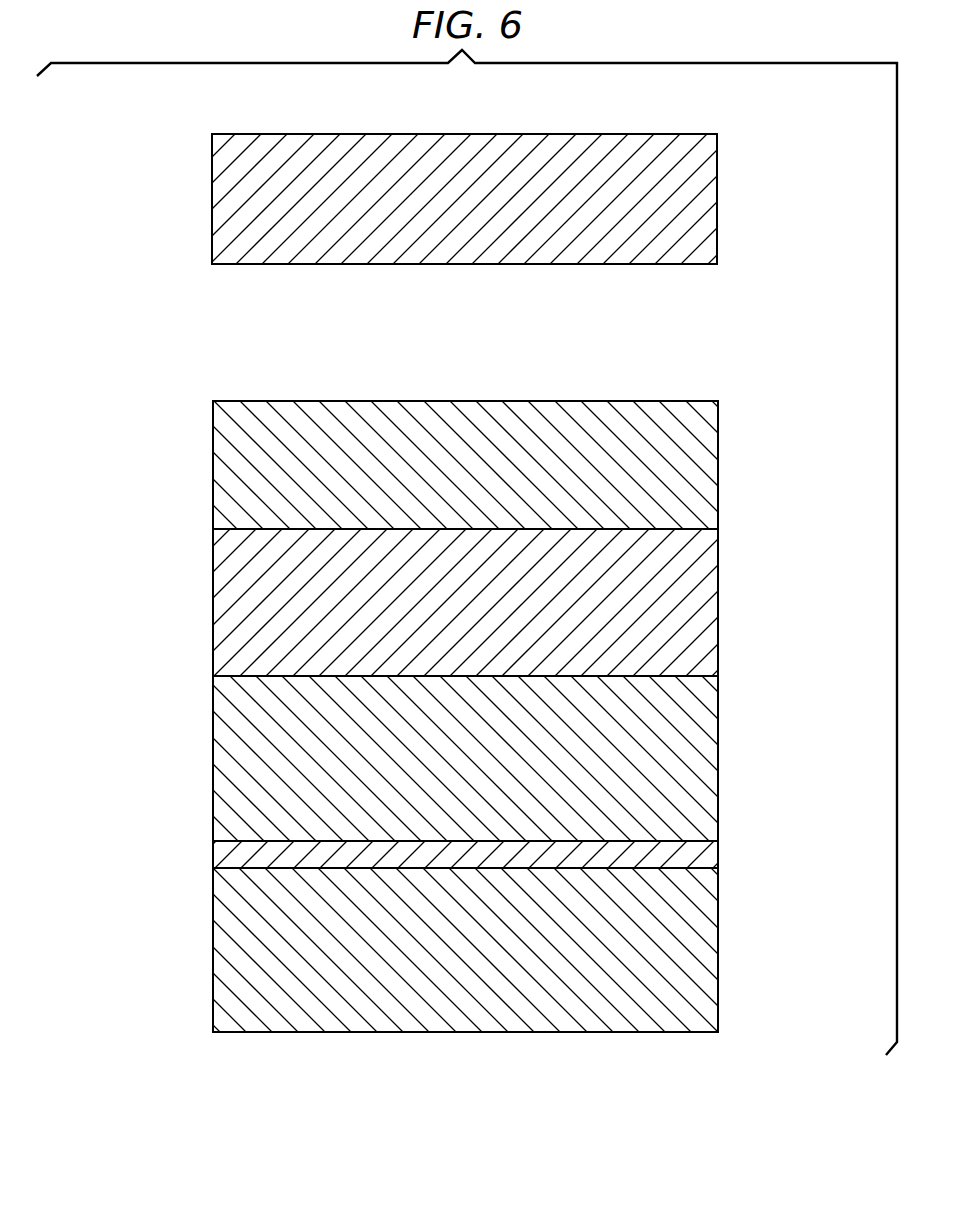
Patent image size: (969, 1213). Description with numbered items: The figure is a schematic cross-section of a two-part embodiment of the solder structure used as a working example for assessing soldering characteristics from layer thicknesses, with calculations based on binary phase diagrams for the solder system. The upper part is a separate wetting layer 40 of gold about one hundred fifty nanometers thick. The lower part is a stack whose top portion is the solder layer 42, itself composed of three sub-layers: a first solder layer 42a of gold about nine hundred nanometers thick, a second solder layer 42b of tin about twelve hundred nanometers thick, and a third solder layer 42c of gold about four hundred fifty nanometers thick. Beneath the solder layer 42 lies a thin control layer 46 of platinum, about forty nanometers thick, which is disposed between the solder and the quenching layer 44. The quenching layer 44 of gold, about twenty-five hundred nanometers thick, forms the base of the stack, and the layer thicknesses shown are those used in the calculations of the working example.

The wetting layer 40 is at (702, 207).
The solder layer 42 is at (545, 623).
The first solder layer 42a is at (703, 431).
The second solder layer 42b is at (703, 592).
The third solder layer 42c is at (501, 758).
The quenching layer 44 is at (703, 920).
The control layer 46 is at (703, 857).